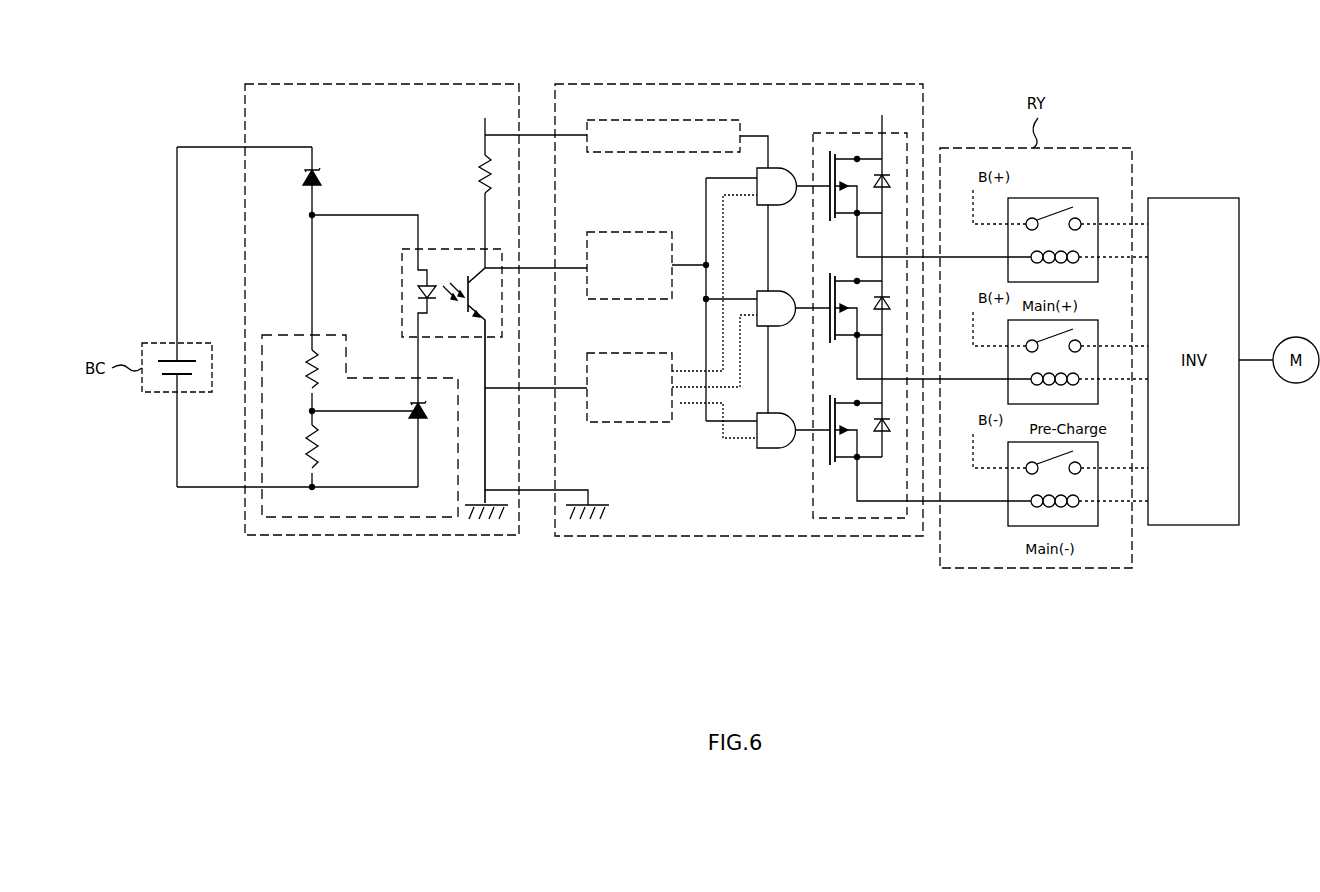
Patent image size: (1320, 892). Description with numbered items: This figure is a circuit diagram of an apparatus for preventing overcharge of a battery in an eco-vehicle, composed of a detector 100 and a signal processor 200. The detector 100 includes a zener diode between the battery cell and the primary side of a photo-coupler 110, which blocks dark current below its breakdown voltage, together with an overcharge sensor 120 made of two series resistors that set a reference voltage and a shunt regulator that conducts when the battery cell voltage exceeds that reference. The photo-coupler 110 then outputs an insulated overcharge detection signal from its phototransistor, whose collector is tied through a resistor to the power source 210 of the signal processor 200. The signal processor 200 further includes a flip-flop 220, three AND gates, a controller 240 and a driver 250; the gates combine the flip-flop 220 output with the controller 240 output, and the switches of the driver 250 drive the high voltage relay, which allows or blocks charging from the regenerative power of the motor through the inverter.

The detector 100 is at (388, 84).
The photo-coupler 110 is at (402, 290).
The overcharge sensor 120 is at (358, 519).
The signal processor 200 is at (735, 84).
The power source 210 is at (630, 120).
The flip-flop 220 is at (630, 232).
The controller 240 is at (630, 353).
The driver 250 is at (862, 519).